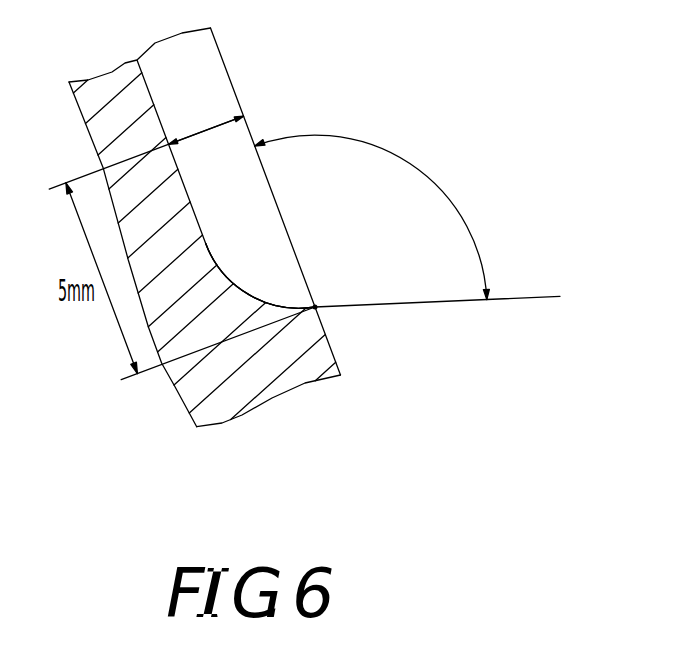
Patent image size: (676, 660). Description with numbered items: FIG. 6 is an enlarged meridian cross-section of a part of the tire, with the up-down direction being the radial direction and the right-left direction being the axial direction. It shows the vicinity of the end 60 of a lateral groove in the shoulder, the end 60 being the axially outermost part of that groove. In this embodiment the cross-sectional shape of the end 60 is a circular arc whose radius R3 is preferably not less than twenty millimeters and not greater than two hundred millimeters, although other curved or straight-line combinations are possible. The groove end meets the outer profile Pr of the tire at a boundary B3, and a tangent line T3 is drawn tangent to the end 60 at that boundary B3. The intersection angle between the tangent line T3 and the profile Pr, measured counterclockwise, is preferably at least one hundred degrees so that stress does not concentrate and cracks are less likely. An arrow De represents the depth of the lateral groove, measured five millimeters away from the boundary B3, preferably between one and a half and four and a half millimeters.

The profile Pr is at (226, 70).
The depth of the lateral groove De is at (206, 123).
The radius of the circular arc R3 is at (307, 193).
The end of the lateral groove 60 is at (254, 296).
The boundary B3 is at (316, 306).
The tangent line T3 is at (513, 299).